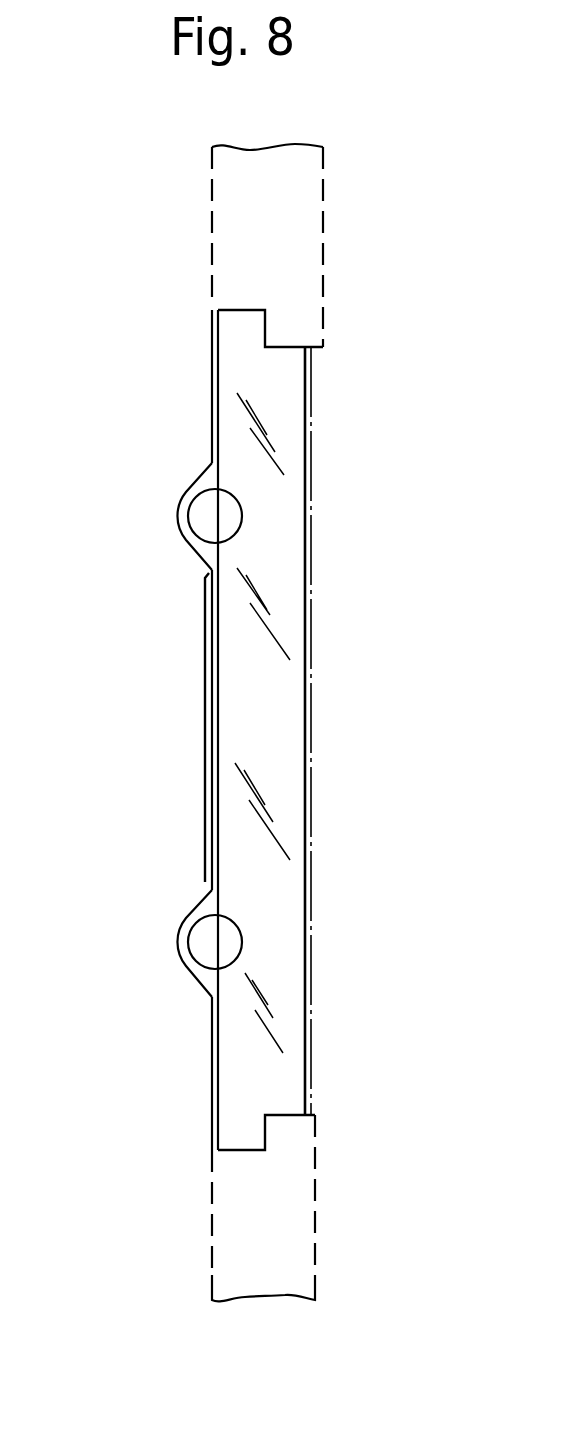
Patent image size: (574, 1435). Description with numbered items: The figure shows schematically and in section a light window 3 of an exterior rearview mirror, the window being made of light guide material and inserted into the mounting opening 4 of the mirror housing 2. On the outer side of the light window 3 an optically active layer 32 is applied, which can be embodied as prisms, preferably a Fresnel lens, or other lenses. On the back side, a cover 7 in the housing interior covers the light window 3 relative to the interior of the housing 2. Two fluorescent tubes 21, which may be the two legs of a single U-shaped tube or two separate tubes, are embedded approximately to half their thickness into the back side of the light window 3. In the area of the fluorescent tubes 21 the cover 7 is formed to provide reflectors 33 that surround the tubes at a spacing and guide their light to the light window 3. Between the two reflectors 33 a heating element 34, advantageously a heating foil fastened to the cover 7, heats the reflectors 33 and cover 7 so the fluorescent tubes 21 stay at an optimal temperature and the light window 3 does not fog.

The mirror housing 2 is at (292, 257).
The light window 3 is at (287, 625).
The mounting opening 4 is at (282, 1115).
The cover 7 is at (212, 410).
The fluorescent tube 21 is at (212, 532).
The optically active layer 32 is at (313, 430).
The reflector 33 is at (177, 508).
The heating element 34 is at (203, 717).